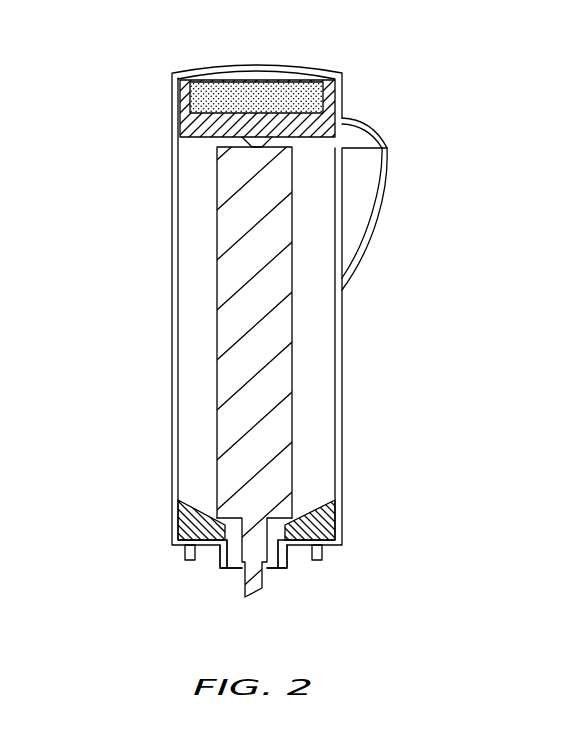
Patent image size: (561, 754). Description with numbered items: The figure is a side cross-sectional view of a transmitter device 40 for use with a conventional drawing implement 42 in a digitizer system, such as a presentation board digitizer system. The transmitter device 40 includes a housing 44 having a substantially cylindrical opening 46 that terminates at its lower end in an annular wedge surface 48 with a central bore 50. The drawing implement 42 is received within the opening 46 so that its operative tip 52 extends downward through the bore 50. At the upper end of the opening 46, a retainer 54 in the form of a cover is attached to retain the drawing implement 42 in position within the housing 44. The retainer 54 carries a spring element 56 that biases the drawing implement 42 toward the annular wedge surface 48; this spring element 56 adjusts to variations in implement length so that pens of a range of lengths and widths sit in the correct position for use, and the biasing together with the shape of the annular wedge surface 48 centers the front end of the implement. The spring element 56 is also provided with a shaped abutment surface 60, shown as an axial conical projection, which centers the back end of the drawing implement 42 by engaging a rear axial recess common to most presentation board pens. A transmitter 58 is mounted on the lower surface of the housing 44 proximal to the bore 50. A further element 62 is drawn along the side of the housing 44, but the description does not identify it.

The assembly 40 is at (412, 105).
The core member 42 is at (218, 237).
The housing 44 is at (162, 302).
The housing cavity 46 is at (193, 349).
The seal ring 48 is at (252, 496).
The bottom recess 50 is at (272, 537).
The stem 52 is at (245, 598).
The cap 54 is at (162, 83).
The cushion insert 56 is at (284, 66).
The bottom boss 58 is at (282, 596).
The contact tabs 60 is at (190, 134).
The handle 62 is at (383, 200).